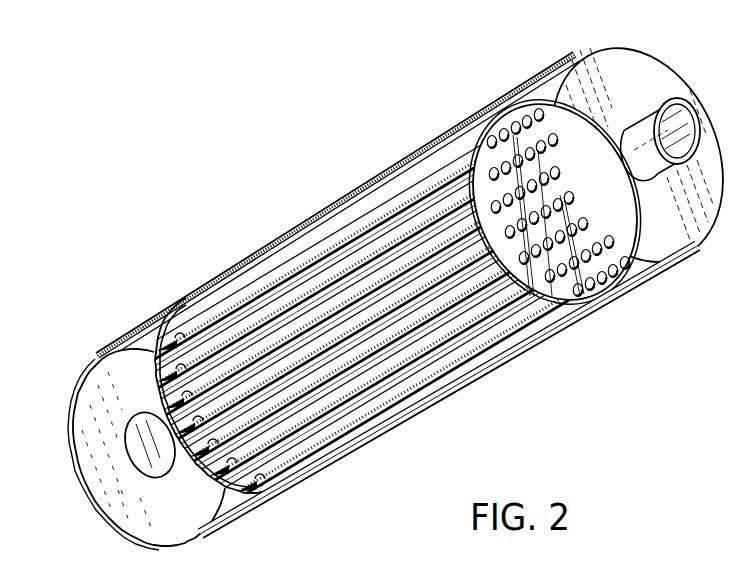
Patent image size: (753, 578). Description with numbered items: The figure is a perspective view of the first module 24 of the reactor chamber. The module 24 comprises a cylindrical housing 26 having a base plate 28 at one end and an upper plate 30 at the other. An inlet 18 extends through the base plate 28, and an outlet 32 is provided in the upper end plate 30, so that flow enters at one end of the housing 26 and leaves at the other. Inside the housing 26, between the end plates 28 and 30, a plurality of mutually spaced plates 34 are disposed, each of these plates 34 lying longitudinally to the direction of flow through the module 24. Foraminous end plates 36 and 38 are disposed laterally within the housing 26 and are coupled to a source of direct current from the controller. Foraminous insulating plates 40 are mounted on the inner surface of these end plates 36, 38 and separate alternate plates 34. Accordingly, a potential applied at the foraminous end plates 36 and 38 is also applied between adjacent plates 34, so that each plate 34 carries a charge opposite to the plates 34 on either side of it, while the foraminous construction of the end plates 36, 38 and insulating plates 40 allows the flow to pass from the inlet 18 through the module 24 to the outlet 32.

The inlet 18 is at (88, 484).
The first module 24 is at (203, 280).
The cylindrical housing 26 is at (480, 114).
The base plate 28 is at (128, 526).
The upper plate 30 is at (642, 76).
The outlet 32 is at (712, 100).
The plates 34 is at (318, 267).
The foraminous end plate 36 is at (606, 287).
The foraminous end plate 38 is at (156, 378).
The foraminous insulating plates 40 is at (182, 306).